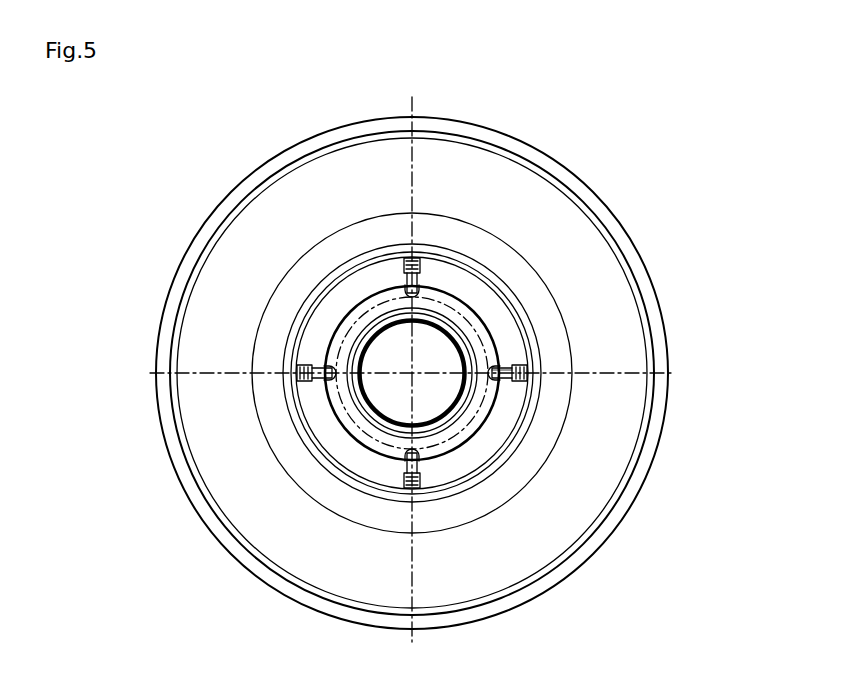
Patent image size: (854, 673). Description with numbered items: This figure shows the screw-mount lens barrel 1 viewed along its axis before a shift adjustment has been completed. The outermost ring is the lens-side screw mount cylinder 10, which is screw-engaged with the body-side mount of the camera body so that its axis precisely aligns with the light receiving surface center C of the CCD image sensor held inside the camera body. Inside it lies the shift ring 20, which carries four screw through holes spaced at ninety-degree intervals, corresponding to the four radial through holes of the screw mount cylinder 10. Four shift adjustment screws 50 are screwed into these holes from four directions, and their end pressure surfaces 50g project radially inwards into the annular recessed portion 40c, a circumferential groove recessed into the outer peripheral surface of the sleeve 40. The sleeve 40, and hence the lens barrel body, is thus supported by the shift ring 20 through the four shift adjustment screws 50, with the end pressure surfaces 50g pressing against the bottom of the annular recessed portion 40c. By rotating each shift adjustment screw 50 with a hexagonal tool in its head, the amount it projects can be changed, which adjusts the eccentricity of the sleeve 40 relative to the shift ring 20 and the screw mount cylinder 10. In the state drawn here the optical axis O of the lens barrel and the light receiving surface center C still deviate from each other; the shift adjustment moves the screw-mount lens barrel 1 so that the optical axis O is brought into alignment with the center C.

The screw-mount lens barrel 1 is at (638, 133).
The lens-side screw mount cylinder 10 is at (218, 290).
The shift ring 20 is at (312, 270).
The sleeve 40 is at (460, 318).
The annular recessed portion 40c is at (335, 356).
The shift adjustment screw 50 is at (422, 283).
The end pressure surface 50g is at (410, 297).
The optical axis O is at (416, 108).
The light receiving surface center C is at (416, 196).